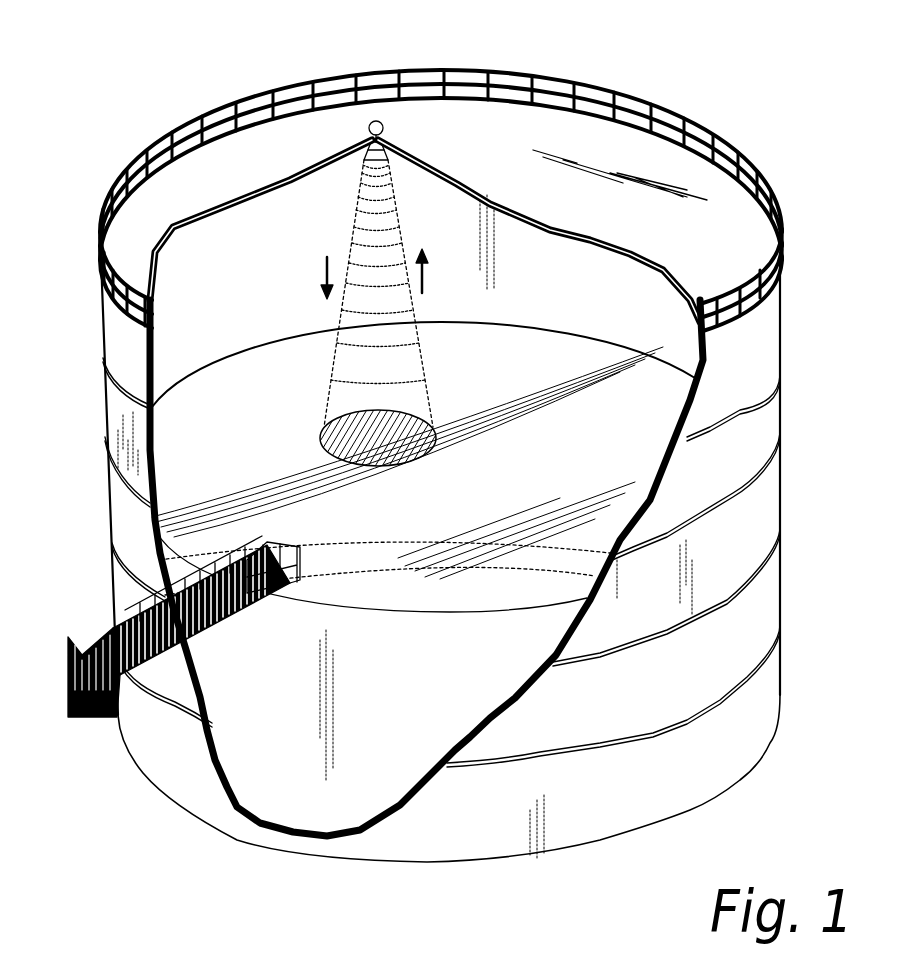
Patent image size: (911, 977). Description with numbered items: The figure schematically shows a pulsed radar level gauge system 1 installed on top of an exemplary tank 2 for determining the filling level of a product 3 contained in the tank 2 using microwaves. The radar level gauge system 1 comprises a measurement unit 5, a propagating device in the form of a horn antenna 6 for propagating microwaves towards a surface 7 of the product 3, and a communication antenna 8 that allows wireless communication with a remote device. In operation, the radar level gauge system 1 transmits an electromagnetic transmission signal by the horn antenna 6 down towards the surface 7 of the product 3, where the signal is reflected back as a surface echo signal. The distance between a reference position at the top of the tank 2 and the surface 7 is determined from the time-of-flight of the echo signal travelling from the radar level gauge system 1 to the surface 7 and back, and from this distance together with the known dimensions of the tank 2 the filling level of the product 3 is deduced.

The level gauge system 1 is at (453, 455).
The tank 2 is at (760, 412).
The product 3 is at (375, 722).
The measurement unit 5 is at (337, 96).
The horn antenna 6 is at (362, 152).
The surface 7 is at (527, 610).
The communication antenna 8 is at (395, 122).